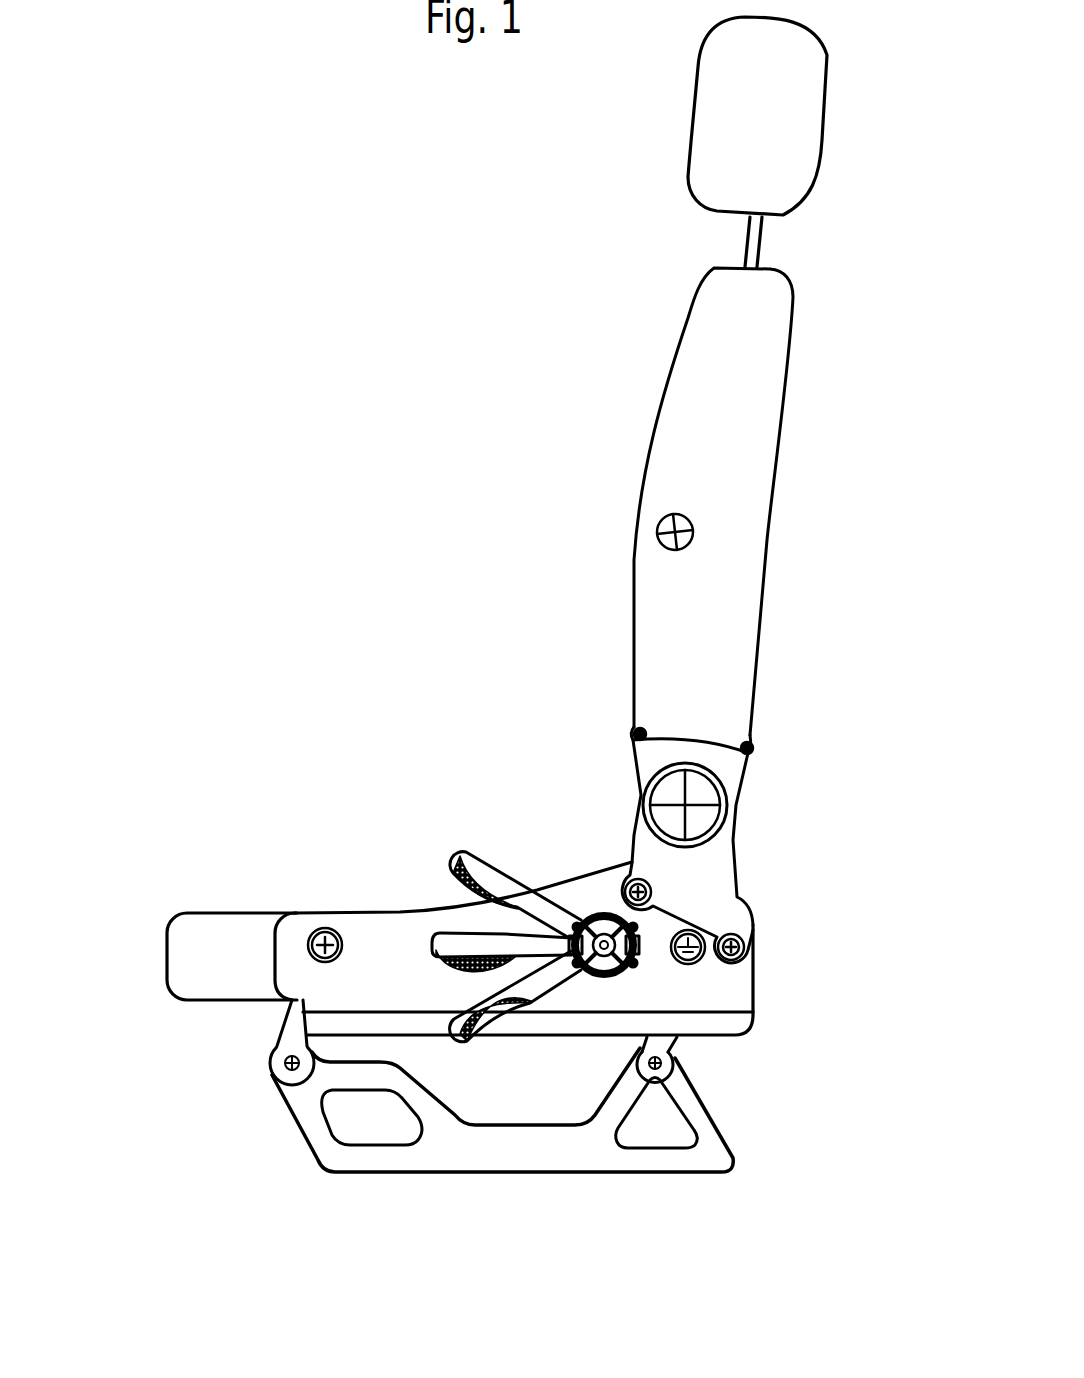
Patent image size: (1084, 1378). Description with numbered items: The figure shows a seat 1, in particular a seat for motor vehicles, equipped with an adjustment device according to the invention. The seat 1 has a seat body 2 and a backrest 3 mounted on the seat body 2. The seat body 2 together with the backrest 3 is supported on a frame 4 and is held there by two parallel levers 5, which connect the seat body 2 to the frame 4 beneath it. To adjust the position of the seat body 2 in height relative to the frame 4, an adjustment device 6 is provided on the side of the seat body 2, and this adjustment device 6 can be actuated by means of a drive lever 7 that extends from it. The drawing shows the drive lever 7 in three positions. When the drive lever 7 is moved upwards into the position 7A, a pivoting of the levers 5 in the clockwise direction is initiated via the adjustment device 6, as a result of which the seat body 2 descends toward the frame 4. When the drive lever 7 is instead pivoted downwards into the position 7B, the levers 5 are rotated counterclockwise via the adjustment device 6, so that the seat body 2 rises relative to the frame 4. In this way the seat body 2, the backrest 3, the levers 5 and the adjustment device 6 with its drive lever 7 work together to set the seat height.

The seat 1 is at (545, 613).
The seat body 2 is at (372, 935).
The backrest 3 is at (742, 580).
The frame 4 is at (545, 1152).
The parallel levers 5 is at (295, 1032).
The adjustment device 6 is at (590, 893).
The drive lever 7 is at (462, 940).
The upper position of the drive lever 7A is at (480, 868).
The lower position of the drive lever 7B is at (473, 1015).